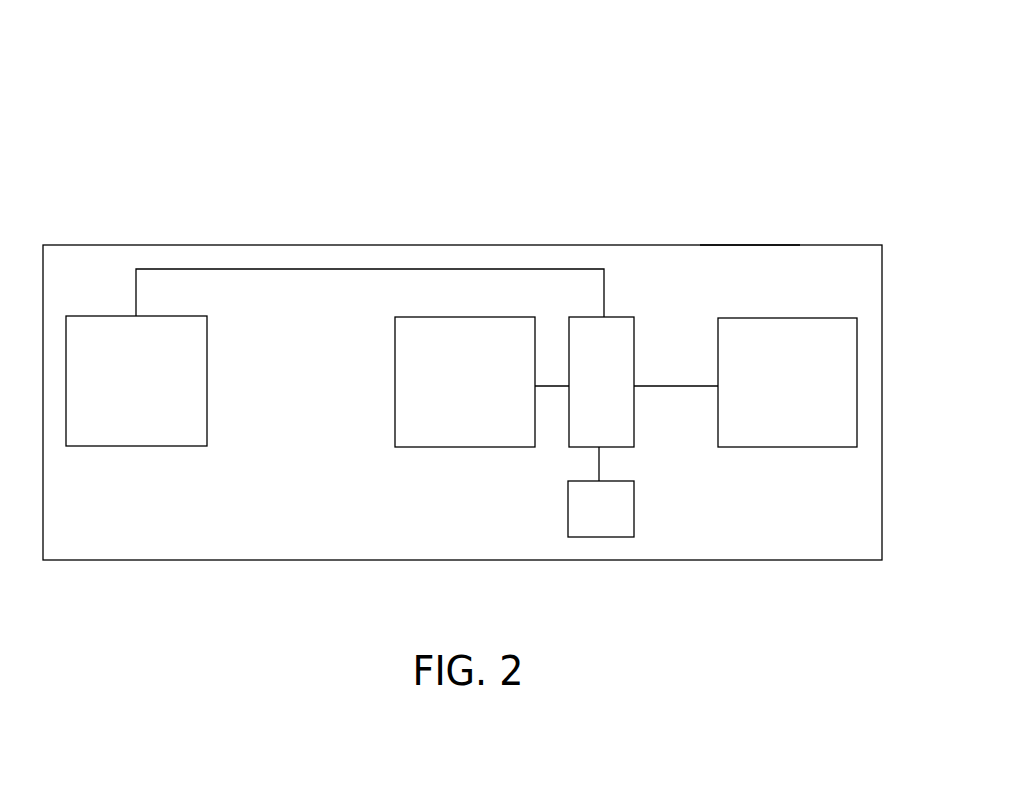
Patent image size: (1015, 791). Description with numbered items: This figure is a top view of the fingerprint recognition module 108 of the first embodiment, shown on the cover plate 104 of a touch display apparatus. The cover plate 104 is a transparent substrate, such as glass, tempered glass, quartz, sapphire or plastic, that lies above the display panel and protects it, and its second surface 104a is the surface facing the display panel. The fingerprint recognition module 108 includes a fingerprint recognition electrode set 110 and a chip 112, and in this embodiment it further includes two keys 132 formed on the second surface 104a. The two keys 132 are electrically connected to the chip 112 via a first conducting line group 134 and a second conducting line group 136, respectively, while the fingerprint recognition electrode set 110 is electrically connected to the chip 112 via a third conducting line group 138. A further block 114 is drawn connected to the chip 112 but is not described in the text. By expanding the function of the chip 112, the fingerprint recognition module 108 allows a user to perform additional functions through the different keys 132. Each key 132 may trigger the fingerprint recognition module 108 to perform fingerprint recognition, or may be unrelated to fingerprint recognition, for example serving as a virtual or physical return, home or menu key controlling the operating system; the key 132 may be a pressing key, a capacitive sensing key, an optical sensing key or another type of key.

The cover plate 104 is at (840, 245).
The second surface 104a is at (756, 260).
The fingerprint recognition module 108 is at (905, 95).
The fingerprint recognition electrode set 110 is at (450, 392).
The chip 112 is at (584, 392).
The power source 114 is at (584, 522).
The key 132 is at (121, 392).
The first conducting line group 134 is at (667, 386).
The second conducting line group 136 is at (366, 268).
The third conducting line group 138 is at (553, 387).